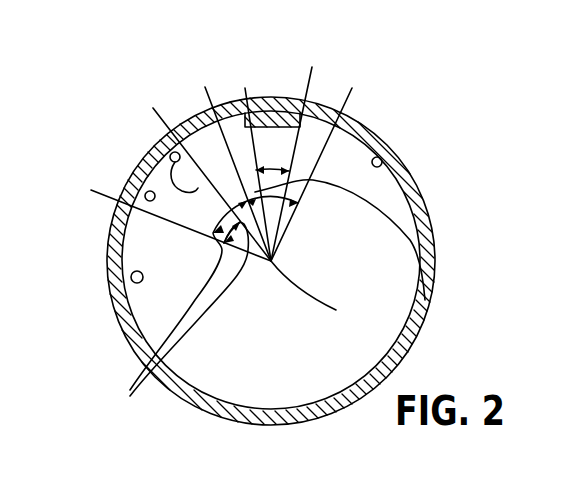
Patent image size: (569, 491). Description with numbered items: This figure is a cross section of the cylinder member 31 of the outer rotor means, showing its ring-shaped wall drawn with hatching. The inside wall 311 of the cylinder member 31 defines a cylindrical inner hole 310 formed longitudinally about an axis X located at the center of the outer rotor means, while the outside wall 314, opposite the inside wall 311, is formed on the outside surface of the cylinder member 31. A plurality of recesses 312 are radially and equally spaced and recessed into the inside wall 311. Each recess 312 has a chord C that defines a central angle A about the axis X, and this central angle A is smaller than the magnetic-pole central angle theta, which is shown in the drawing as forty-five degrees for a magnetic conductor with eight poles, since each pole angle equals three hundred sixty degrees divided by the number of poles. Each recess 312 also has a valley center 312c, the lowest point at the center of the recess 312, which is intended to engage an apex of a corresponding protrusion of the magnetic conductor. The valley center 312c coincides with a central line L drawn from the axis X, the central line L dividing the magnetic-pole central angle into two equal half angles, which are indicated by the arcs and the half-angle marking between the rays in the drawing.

The cylindrical inner hole 310 is at (353, 340).
The outside wall 314 is at (413, 177).
The recesses 312 is at (262, 100).
The valley center 312c is at (171, 154).
The inside wall 311 is at (213, 232).
The cylinder member 31 is at (198, 112).
The central line L is at (197, 167).
The central angle A is at (200, 173).
The chord C is at (302, 149).
The axis X is at (303, 208).